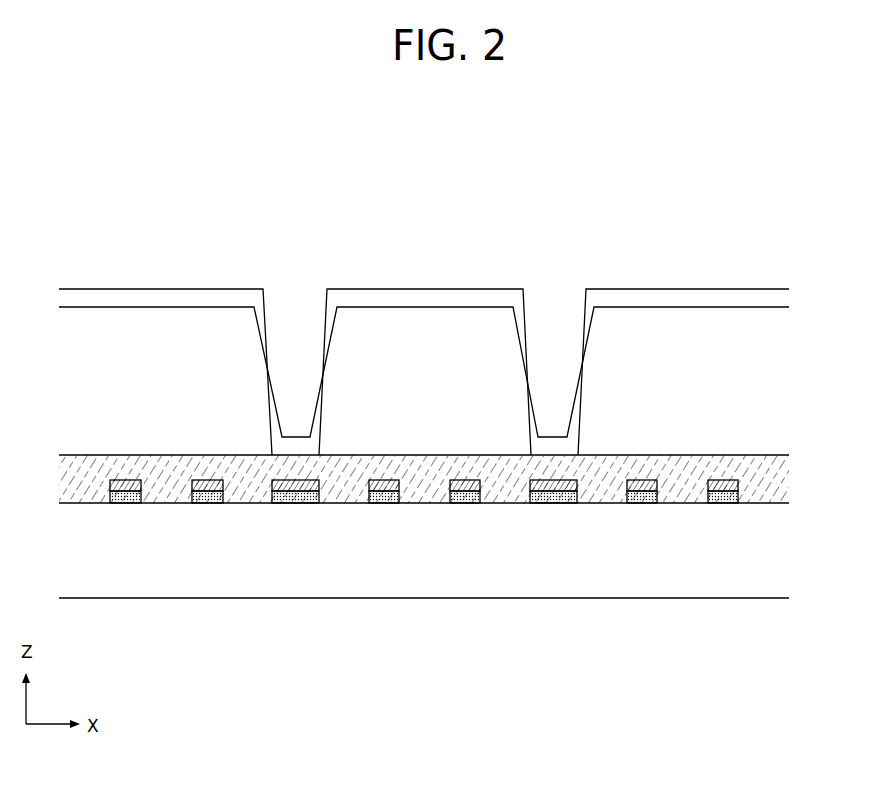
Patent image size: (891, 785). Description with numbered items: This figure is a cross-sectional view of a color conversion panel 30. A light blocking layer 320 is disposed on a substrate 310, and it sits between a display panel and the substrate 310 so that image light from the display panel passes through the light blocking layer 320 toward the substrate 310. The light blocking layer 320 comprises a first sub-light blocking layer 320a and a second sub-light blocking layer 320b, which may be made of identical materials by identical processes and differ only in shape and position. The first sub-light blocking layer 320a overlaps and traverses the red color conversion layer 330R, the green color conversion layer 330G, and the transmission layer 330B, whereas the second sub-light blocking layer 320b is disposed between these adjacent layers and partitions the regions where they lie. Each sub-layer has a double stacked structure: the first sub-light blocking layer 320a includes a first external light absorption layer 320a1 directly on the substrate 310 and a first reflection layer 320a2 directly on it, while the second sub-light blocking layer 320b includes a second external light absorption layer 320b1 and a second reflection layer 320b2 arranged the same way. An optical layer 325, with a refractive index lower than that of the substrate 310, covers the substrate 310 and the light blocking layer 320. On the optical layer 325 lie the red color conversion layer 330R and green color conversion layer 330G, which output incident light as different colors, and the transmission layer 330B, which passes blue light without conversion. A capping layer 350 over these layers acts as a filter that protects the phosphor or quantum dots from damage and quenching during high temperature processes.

The color conversion panel 30 is at (782, 256).
The substrate 310 is at (777, 555).
The light blocking layer 320 is at (443, 608).
The first sub-light blocking layer 320a is at (721, 586).
The first external light absorption layer 320a1 is at (725, 494).
The first reflection layer 320a2 is at (710, 494).
The second sub-light blocking layer 320b is at (551, 586).
The second external light absorption layer 320b1 is at (562, 494).
The second reflection layer 320b2 is at (540, 494).
The optical layer 325 is at (777, 470).
The transmission layer 330B is at (172, 340).
The green color conversion layer 330G is at (425, 340).
The red color conversion layer 330R is at (675, 343).
The capping layer 350 is at (777, 299).